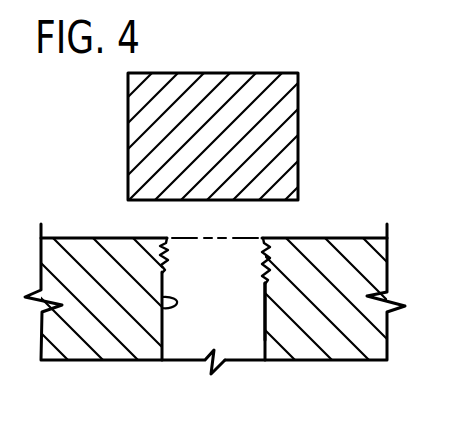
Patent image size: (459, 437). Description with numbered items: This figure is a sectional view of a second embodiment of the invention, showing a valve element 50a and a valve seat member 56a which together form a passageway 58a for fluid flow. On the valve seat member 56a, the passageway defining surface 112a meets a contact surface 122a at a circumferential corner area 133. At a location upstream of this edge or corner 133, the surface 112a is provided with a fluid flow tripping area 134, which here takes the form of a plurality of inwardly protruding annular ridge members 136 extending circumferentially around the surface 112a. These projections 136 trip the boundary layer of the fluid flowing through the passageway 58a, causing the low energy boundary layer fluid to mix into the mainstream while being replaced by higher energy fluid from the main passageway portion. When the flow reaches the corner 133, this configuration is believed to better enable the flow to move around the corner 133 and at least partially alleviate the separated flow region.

The valve element 50a is at (253, 86).
The passageway defining surface 112a is at (137, 313).
The contact surface 122a is at (162, 301).
The fluid flow tripping area 134 is at (178, 257).
The valve seat member 56a is at (317, 250).
The passageway 58a is at (257, 331).
The circumferential corner area 133 is at (261, 237).
The annular ridge members 136 is at (262, 277).